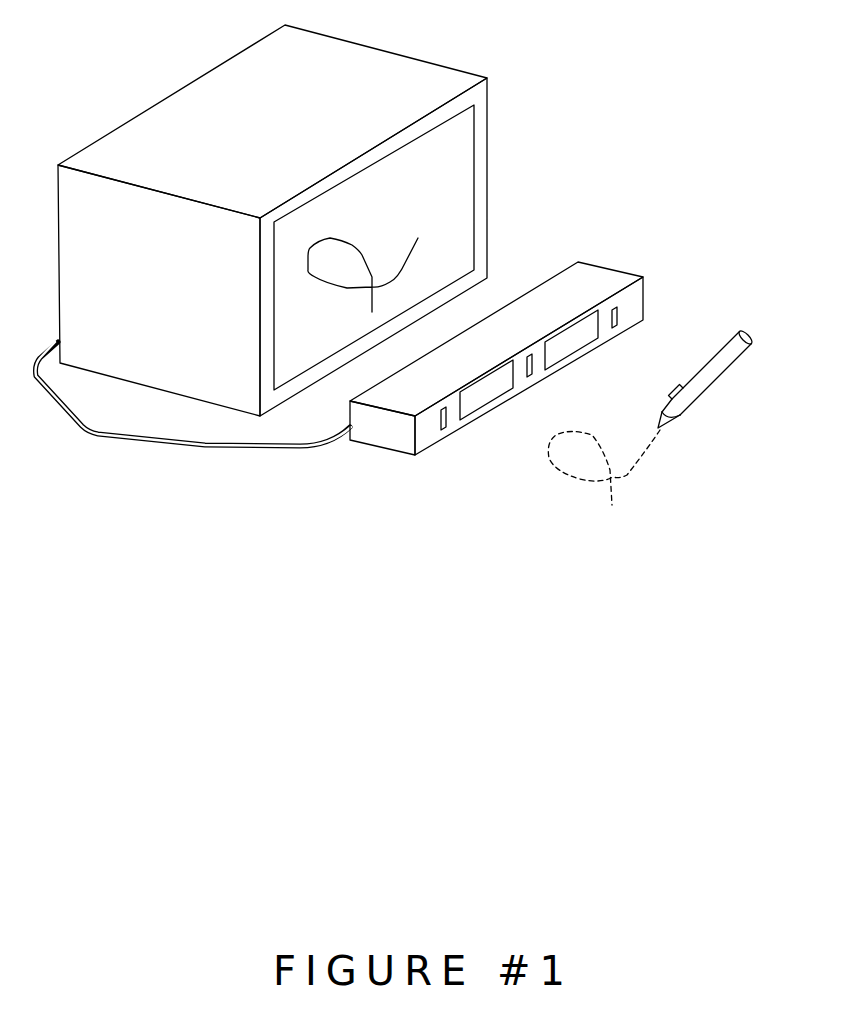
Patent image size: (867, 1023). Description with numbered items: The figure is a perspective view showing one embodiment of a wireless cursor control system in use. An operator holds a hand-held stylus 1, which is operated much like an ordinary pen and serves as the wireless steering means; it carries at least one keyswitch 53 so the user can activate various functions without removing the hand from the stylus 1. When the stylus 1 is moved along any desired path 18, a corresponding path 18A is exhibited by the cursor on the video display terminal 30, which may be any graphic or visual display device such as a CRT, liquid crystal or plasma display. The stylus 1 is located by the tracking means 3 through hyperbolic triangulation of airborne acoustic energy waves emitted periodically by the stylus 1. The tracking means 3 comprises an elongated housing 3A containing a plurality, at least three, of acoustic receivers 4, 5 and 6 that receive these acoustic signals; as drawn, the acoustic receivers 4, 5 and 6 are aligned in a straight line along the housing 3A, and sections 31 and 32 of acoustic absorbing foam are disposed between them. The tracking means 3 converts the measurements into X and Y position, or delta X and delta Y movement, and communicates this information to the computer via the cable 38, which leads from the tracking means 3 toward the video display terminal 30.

The stylus 1 is at (706, 389).
The tracking means 3 is at (529, 358).
The elongated housing 3A is at (625, 278).
The acoustic receiver 4 is at (445, 430).
The acoustic receiver 5 is at (525, 388).
The acoustic receiver 6 is at (610, 330).
The path 18 is at (563, 475).
The corresponding path 18A is at (405, 265).
The video display terminal 30 is at (477, 117).
The section of acoustic absorbing foam 31 is at (483, 403).
The section of acoustic absorbing foam 32 is at (568, 353).
The cable 38 is at (152, 442).
The keyswitch 53 is at (678, 397).